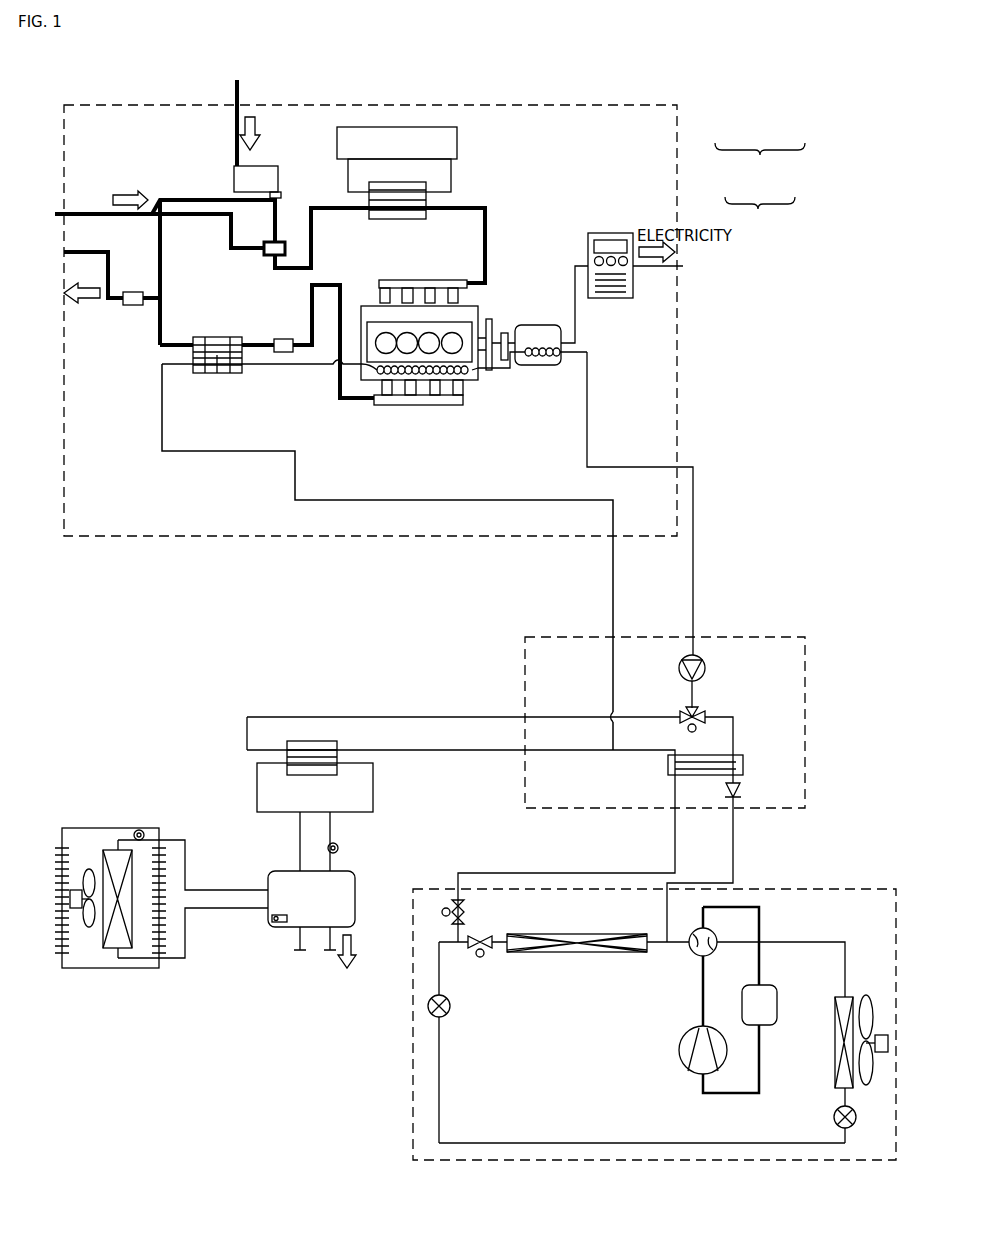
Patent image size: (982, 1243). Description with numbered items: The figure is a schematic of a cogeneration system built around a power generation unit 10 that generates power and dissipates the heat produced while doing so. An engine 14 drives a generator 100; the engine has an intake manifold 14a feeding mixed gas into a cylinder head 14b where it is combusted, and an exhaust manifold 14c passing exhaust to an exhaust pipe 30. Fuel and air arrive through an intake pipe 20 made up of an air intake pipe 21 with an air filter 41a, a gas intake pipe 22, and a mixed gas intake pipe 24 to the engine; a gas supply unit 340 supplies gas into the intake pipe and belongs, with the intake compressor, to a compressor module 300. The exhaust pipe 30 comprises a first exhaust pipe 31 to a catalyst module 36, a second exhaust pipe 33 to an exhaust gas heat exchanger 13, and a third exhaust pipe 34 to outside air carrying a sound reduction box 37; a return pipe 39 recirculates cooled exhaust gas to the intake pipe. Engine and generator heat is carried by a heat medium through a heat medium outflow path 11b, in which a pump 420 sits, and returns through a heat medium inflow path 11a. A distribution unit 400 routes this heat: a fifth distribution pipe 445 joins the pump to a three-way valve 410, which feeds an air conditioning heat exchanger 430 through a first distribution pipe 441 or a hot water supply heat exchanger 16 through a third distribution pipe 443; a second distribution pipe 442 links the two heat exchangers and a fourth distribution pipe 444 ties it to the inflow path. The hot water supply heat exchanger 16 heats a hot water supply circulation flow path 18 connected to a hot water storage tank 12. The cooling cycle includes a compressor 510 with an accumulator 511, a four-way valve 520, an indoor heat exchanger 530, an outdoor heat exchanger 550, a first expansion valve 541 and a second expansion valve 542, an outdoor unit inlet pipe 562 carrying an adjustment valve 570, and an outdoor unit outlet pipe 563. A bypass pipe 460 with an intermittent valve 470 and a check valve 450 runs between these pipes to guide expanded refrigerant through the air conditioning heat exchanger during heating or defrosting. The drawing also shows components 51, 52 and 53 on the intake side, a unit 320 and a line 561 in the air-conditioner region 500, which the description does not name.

The power generation unit 10 is at (637, 105).
The heat medium inflow path 11a is at (693, 525).
The heat medium outflow path 11b is at (257, 451).
The hot water storage tank 12 is at (356, 900).
The exhaust gas heat exchanger 13 is at (220, 337).
The engine 14 is at (487, 300).
The intake manifold 14a is at (452, 280).
The cylinder head 14b is at (478, 375).
The exhaust manifold 14c is at (451, 405).
The hot water supply heat exchanger 16 is at (320, 741).
The hot water supply circulation flow path 18 is at (330, 852).
The intake pipe 20 is at (764, 147).
The air intake pipe 21 is at (236, 133).
The gas intake pipe 22 is at (97, 220).
The mixed gas intake pipe 24 is at (343, 212).
The exhaust pipe 30 is at (761, 200).
The first exhaust pipe 31 is at (340, 387).
The second exhaust pipe 33 is at (254, 342).
The third exhaust pipe 34 is at (116, 298).
The catalyst module 36 is at (284, 339).
The sound reduction box 37 is at (133, 292).
The return pipe 39 is at (183, 200).
The air filter 41a is at (262, 167).
The mixer 51 is at (426, 197).
The turbocharger 52 is at (458, 143).
The intercooler 53 is at (452, 175).
The generator 100 is at (570, 360).
The compressor module 300 is at (266, 256).
The radiator 320 is at (110, 971).
The gas supply unit 340 is at (226, 892).
The distribution unit 400 is at (773, 637).
The three-way valve 410 is at (699, 711).
The pump 420 is at (706, 668).
The air conditioning heat exchanger 430 is at (744, 765).
The first distribution pipe 441 is at (734, 727).
The second distribution pipe 442 is at (472, 750).
The third distribution pipe 443 is at (437, 717).
The fourth distribution pipe 444 is at (612, 675).
The fifth distribution pipe 445 is at (690, 694).
The check valve 450 is at (742, 790).
The bypass pipe 460 is at (675, 836).
The intermittent valve 470 is at (465, 906).
The heat pump unit 500 is at (868, 889).
The compressor 510 is at (679, 1048).
The accumulator 511 is at (777, 1003).
The four-way valve 520 is at (713, 952).
The indoor heat exchanger 530 is at (835, 1052).
The first expansion valve 541 is at (452, 1005).
The second expansion valve 542 is at (834, 1117).
The outdoor heat exchanger 550 is at (590, 934).
The refrigerant line 561 is at (590, 1143).
The outdoor unit inlet pipe 562 is at (440, 976).
The outdoor unit outlet pipe 563 is at (657, 955).
The adjustment valve 570 is at (484, 936).